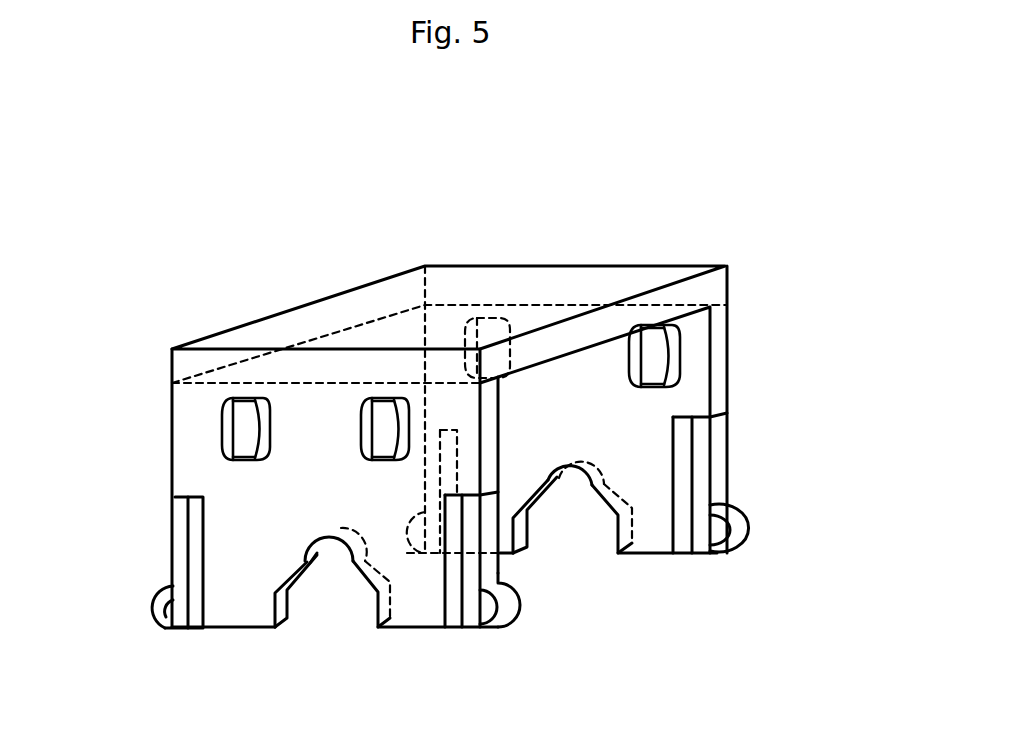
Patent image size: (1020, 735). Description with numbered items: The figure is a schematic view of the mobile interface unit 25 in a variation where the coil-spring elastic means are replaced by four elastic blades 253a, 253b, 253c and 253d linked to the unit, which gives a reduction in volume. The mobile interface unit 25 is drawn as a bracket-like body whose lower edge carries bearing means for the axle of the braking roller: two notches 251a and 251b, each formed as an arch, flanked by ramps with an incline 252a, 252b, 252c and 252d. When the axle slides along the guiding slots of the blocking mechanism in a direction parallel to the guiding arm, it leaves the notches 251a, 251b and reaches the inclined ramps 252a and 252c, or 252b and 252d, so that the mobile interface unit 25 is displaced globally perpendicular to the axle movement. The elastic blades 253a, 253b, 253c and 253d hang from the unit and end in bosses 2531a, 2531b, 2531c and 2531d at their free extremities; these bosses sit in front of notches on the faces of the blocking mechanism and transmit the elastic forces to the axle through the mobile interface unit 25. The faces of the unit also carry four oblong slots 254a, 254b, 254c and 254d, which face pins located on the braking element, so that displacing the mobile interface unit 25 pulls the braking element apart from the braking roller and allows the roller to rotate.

The mobile interface unit 25 is at (461, 290).
The notch 251a is at (332, 535).
The notch 251b is at (588, 457).
The inclined ramp 252a is at (290, 587).
The inclined ramp 252b is at (353, 583).
The inclined ramp 252c is at (533, 503).
The inclined ramp 252d is at (612, 510).
The elastic blade 253a is at (178, 565).
The elastic blade 253b is at (488, 572).
The elastic blade 253c is at (425, 498).
The elastic blade 253d is at (713, 457).
The boss 2531a is at (166, 612).
The boss 2531b is at (508, 605).
The boss 2531c is at (418, 527).
The boss 2531d is at (740, 523).
The oblong slot 254a is at (245, 430).
The oblong slot 254b is at (385, 433).
The oblong slot 254c is at (492, 338).
The oblong slot 254d is at (653, 355).